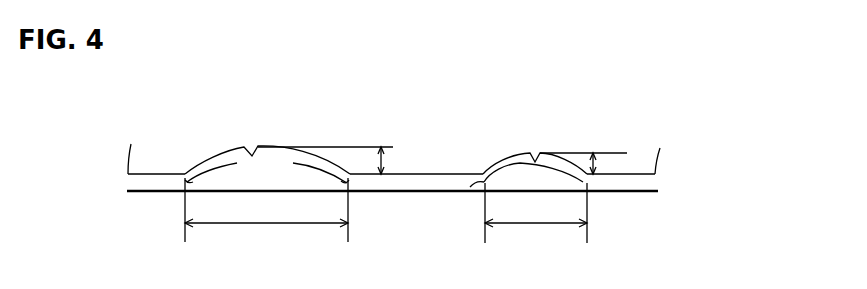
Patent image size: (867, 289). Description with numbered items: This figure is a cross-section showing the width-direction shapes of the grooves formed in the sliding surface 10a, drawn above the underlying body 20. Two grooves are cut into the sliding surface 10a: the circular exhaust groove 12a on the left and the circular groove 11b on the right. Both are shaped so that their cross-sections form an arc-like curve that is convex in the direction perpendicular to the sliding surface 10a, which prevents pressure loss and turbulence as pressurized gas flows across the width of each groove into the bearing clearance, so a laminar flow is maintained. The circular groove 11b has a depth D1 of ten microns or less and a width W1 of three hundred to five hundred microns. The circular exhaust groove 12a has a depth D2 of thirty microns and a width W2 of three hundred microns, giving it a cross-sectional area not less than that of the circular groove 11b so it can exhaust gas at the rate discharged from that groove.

The sliding surface 10a is at (643, 176).
The base layer 20 is at (423, 191).
The circular exhaust groove 12a is at (258, 148).
The circular groove 11b is at (538, 153).
The depth of the circular exhaust groove D2 is at (386, 162).
The depth of the circular groove D1 is at (598, 163).
The width of the circular exhaust groove W2 is at (266, 218).
The width of the circular groove W1 is at (536, 222).